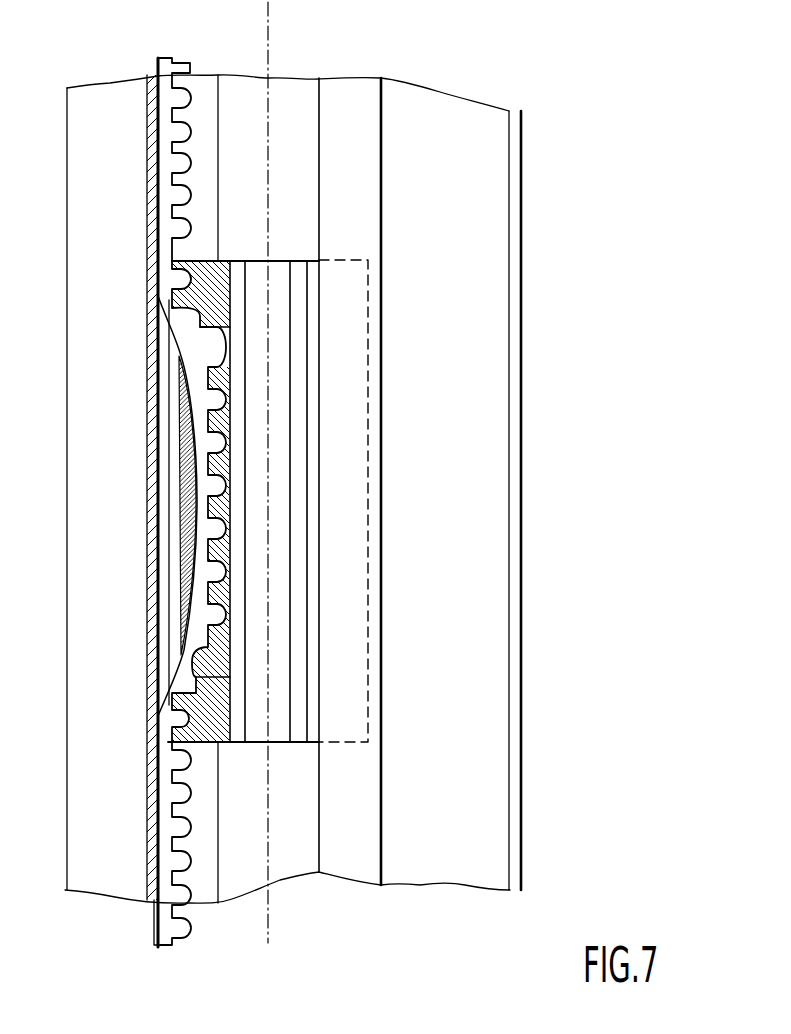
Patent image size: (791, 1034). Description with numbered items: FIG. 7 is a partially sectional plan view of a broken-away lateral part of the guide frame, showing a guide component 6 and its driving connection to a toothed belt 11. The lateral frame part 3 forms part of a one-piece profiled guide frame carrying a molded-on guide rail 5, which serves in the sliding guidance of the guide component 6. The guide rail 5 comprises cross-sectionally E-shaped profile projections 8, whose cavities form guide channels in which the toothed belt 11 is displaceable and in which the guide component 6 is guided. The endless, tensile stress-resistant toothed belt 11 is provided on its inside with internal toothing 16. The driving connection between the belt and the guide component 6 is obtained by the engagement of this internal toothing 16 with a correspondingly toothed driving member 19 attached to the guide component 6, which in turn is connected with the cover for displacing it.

The lateral frame part 3 is at (522, 266).
The guide rail 5 is at (384, 295).
The guide component 6 is at (289, 257).
The profile projection 8 is at (147, 152).
The toothed belt 11 is at (158, 948).
The internal toothing 16 is at (181, 165).
The driving member 19 is at (174, 422).